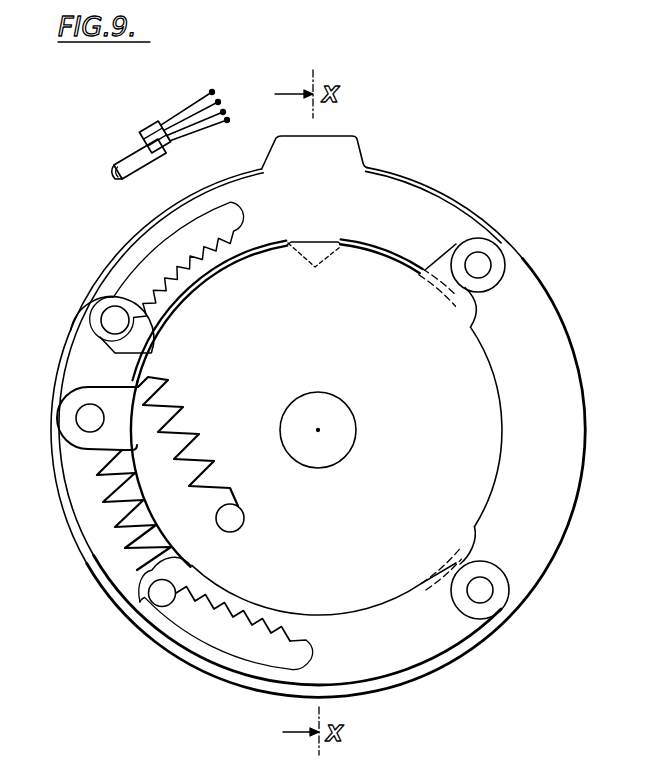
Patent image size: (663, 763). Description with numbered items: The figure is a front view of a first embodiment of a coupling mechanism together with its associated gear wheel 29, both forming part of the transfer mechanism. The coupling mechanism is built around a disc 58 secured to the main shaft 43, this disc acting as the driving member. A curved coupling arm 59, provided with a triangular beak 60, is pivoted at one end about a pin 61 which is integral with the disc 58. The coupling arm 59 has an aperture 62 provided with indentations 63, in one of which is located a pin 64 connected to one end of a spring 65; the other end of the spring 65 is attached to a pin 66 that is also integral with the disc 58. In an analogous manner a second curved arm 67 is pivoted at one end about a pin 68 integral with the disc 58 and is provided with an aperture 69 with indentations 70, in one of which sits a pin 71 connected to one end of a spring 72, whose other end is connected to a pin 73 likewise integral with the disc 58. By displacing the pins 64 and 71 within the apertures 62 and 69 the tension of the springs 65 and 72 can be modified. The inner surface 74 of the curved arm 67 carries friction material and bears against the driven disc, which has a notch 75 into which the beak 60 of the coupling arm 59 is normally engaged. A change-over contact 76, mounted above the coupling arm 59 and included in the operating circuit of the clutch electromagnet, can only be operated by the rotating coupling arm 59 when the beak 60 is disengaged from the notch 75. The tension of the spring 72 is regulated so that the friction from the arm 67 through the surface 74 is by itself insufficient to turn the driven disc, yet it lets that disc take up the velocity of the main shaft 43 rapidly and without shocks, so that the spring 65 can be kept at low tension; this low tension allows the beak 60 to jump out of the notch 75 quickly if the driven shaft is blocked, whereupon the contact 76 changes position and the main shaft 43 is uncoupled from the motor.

The gear wheel 29 is at (568, 527).
The main shaft 43 is at (345, 450).
The disc 58 is at (500, 397).
The coupling arm 59 is at (263, 176).
The triangular beak 60 is at (316, 262).
The pin 61 is at (478, 265).
The aperture 62 is at (233, 210).
The indentations 63 is at (228, 240).
The pin 64 is at (110, 320).
The spring 65 is at (160, 383).
The pin 66 is at (240, 528).
The curved arm 67 is at (402, 660).
The pin 68 is at (480, 590).
The aperture 69 is at (242, 643).
The indentations 70 is at (290, 643).
The pin 71 is at (157, 593).
The spring 72 is at (138, 532).
The pin 73 is at (85, 418).
The inner surface 74 is at (295, 609).
The notch 75 is at (300, 256).
The change-over contact 76 is at (154, 144).